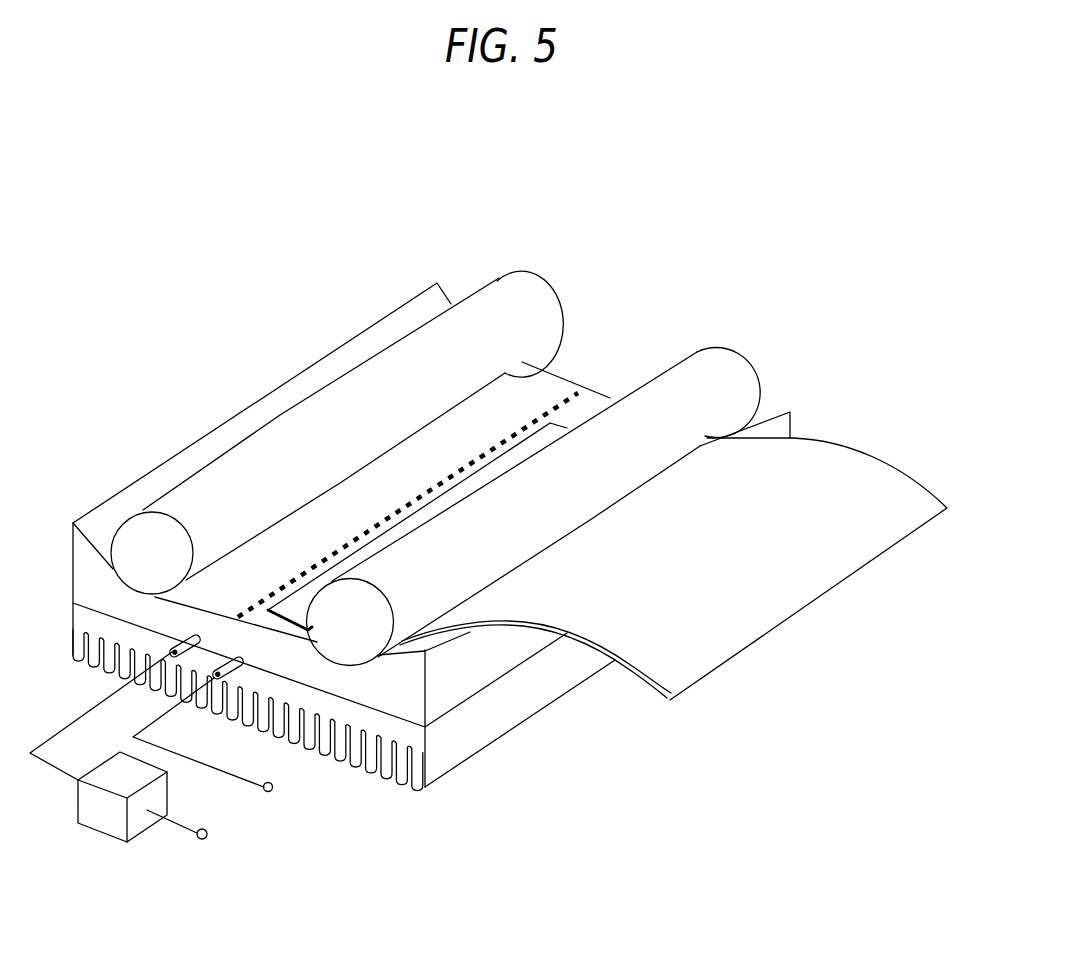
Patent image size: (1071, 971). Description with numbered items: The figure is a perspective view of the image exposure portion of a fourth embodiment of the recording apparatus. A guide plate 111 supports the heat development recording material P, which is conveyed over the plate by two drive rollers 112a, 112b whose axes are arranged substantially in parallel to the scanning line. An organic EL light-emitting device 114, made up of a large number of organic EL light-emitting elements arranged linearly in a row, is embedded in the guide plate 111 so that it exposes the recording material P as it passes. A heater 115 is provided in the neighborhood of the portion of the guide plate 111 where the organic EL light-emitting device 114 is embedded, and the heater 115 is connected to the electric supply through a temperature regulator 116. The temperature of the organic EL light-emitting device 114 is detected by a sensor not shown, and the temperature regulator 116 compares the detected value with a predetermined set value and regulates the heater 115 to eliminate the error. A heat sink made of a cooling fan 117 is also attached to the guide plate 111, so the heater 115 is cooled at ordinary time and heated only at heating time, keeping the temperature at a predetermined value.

The guide plate 111 is at (585, 401).
The drive roller 112a is at (697, 384).
The drive roller 112b is at (483, 306).
The organic EL light-emitting device 114 is at (515, 428).
The heater 115 is at (233, 683).
The temperature regulator 116 is at (115, 820).
The cooling fan (heat sink) 117 is at (383, 723).
The heat development recording material P is at (713, 630).